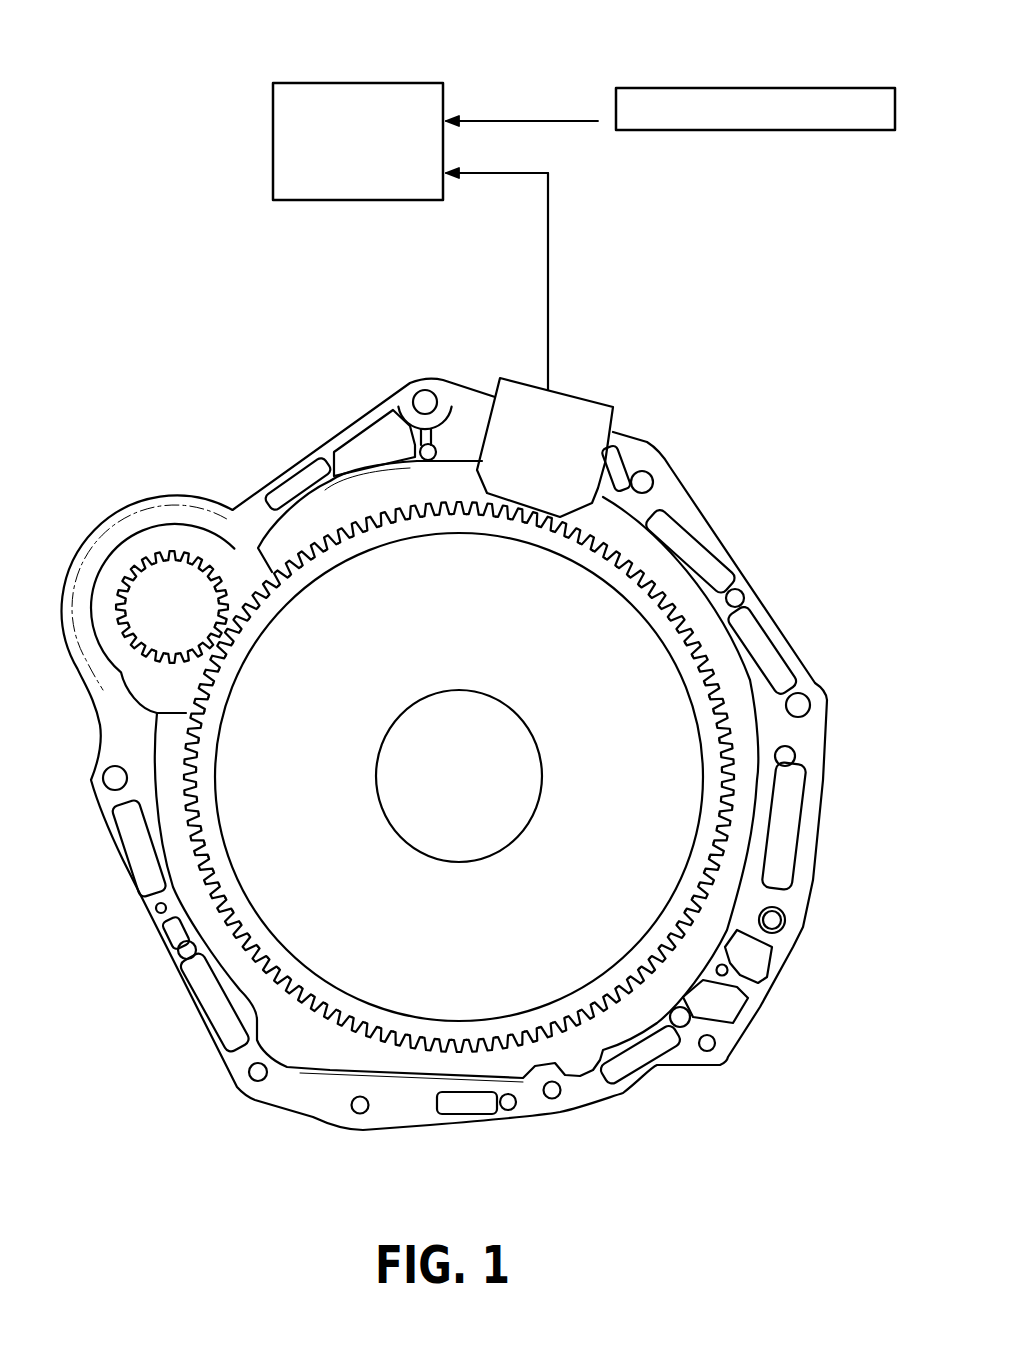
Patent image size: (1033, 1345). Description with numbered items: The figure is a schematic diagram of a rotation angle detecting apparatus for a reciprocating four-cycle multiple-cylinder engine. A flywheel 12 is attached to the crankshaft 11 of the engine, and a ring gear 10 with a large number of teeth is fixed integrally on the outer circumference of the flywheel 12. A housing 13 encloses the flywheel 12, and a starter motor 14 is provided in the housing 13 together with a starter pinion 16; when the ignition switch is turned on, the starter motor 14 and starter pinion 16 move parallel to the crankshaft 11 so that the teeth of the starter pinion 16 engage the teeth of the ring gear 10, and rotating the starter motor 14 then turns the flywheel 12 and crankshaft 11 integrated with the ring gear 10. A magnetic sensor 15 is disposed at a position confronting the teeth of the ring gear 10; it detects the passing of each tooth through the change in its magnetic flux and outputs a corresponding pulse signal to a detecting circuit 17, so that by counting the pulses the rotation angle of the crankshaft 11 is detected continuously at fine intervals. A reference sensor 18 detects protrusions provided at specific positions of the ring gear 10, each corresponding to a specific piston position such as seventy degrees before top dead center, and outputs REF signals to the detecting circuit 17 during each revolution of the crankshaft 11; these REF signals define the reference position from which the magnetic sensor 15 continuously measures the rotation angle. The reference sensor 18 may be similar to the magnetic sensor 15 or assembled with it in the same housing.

The ring gear 10 is at (297, 997).
The crankshaft 11 is at (482, 840).
The flywheel 12 is at (446, 1000).
The housing 13 is at (725, 543).
The starter motor 14 is at (77, 573).
The magnetic sensor 15 is at (557, 408).
The starter pinion 16 is at (160, 568).
The detecting circuit 17 is at (278, 147).
The reference sensor 18 is at (812, 92).